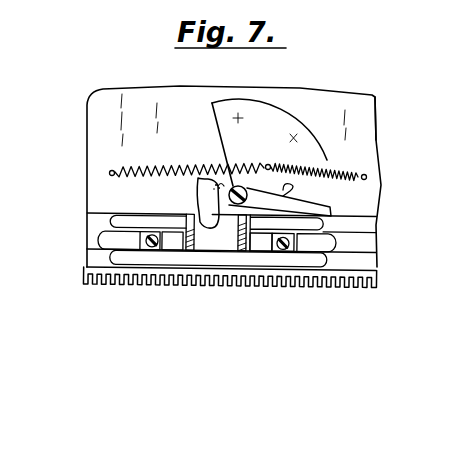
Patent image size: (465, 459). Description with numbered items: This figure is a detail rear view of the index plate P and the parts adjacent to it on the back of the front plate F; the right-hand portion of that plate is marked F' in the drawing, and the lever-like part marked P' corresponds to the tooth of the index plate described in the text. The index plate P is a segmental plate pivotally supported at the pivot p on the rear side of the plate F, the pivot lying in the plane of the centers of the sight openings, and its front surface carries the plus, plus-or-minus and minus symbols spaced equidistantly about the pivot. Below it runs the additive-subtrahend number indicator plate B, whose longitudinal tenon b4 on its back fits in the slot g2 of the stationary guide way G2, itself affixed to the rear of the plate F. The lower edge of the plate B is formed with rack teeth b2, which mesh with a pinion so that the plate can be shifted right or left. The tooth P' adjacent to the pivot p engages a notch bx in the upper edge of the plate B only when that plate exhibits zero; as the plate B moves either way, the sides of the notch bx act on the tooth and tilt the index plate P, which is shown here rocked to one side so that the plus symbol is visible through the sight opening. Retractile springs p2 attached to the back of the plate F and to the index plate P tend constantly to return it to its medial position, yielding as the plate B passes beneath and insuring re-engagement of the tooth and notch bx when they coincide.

The front plate F is at (211, 174).
The frame side F' is at (406, 118).
The index plate P is at (280, 124).
The lever arm P' is at (278, 249).
The pivot p is at (286, 191).
The retractile springs p2 is at (138, 162).
The additive-subtrahend number indicator plate B is at (206, 211).
The stationary guide way G2 is at (380, 225).
The slot g2 is at (366, 242).
The longitudinal tenon b4 is at (113, 241).
The rack teeth b2 is at (100, 276).
The notch bx is at (226, 215).